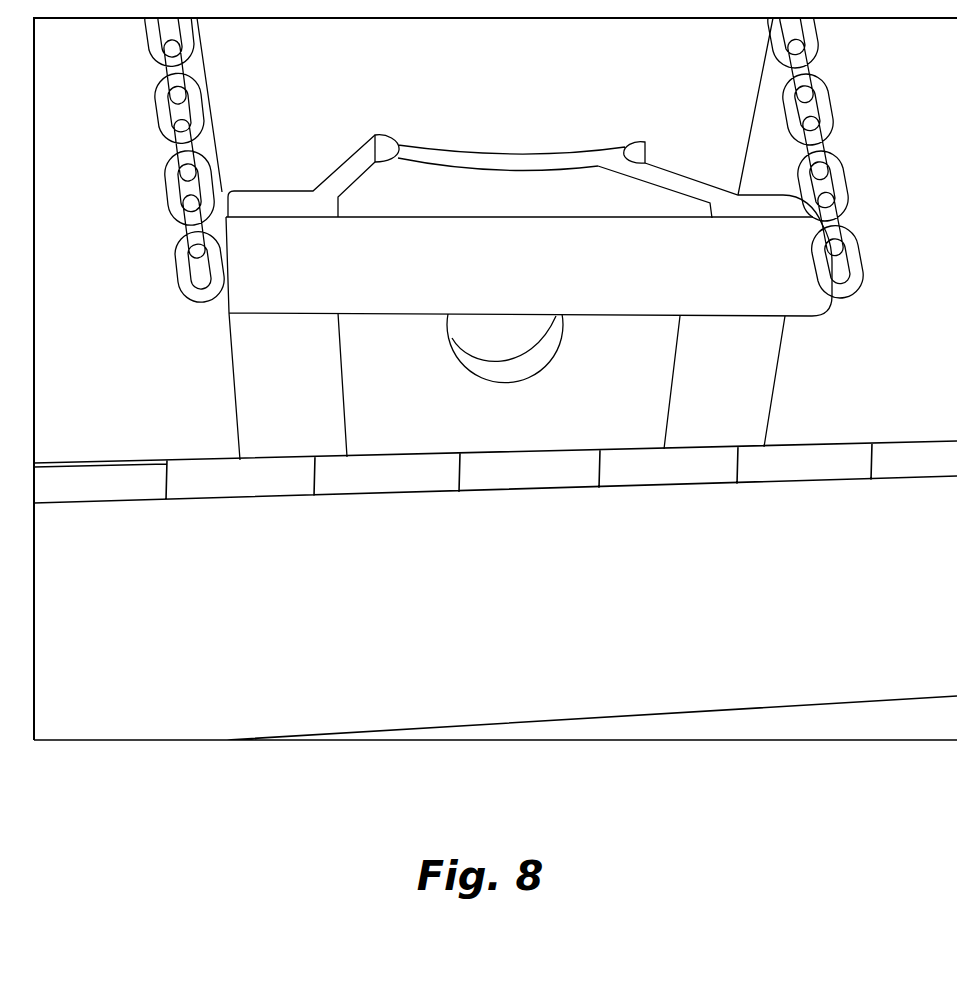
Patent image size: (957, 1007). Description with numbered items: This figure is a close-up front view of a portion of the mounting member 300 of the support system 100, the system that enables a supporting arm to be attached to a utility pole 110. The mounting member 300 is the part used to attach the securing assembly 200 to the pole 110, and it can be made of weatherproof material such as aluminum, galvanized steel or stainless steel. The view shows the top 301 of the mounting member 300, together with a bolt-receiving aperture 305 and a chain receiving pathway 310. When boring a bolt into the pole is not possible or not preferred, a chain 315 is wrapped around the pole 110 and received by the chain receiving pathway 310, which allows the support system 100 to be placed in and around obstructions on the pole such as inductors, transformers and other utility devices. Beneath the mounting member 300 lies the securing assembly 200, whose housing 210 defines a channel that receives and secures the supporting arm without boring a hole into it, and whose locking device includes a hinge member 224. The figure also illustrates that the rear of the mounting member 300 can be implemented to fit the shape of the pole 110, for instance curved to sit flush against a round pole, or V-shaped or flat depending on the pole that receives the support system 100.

The support system 100 is at (475, 230).
The utility pole 110 is at (485, 106).
The securing assembly 200 is at (495, 554).
The housing 210 is at (495, 655).
The hinge member 224 is at (182, 470).
The mounting member 300 is at (698, 363).
The top 301 is at (435, 178).
The bolt-receiving aperture 305 is at (498, 333).
The chain receiving pathway 310 is at (529, 195).
The chain 315 is at (165, 120).